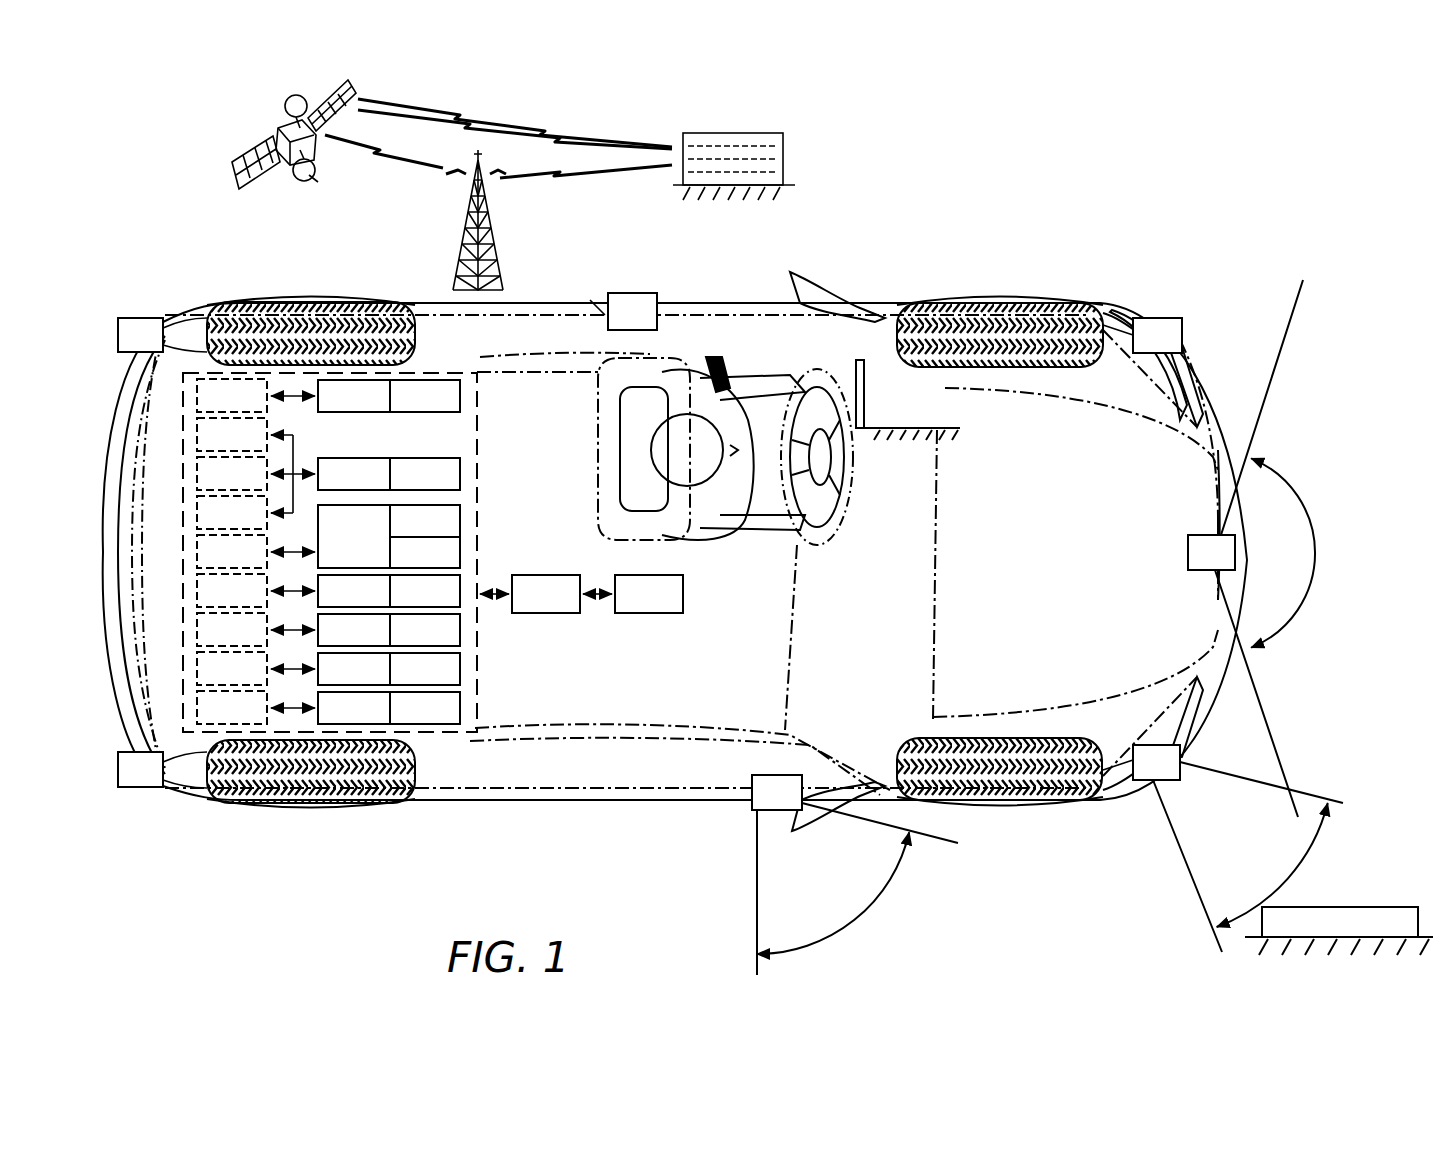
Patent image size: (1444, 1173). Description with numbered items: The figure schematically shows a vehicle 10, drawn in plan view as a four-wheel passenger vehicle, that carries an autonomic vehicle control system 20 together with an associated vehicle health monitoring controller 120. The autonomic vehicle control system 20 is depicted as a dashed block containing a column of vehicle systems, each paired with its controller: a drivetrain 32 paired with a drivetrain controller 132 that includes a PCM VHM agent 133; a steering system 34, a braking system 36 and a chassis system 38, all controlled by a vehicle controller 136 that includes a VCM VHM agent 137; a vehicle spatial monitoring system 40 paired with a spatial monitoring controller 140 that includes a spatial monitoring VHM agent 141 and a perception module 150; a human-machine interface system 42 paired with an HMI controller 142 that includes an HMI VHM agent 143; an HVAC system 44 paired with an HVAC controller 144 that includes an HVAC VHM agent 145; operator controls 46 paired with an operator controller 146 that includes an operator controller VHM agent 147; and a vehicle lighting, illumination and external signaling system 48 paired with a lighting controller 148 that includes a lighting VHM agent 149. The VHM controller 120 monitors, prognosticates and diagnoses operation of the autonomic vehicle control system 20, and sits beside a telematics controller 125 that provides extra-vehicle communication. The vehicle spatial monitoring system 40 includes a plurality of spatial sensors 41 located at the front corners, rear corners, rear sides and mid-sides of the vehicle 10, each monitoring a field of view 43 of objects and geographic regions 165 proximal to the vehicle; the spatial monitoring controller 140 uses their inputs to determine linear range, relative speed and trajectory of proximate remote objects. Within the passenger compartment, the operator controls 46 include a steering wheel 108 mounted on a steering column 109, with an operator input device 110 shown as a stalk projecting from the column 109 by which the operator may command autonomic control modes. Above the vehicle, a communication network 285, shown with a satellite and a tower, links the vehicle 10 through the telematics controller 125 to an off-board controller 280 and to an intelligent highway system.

The vehicle 10 is at (176, 164).
The autonomic vehicle control system 20 is at (182, 548).
The drivetrain 32 is at (245, 407).
The steering system 34 is at (245, 446).
The braking system 36 is at (245, 485).
The chassis system 38 is at (245, 524).
The vehicle spatial monitoring system 40 is at (245, 563).
The spatial sensors 41 is at (154, 780).
The human-machine interface (HMI) system 42 is at (245, 602).
The field of view 43 is at (883, 897).
The HVAC system 44 is at (245, 641).
The operator controls 46 is at (245, 680).
The vehicle lighting, illumination and external signaling system 48 is at (245, 719).
The steering wheel 108 is at (848, 473).
The steering column 109 is at (870, 428).
The operator input device 110 is at (866, 402).
The vehicle health monitoring (VHM) controller 120 is at (565, 605).
The telematics controller 125 is at (668, 605).
The drivetrain controller (PCM) 132 is at (374, 407).
The PCM VHM agent 133 is at (444, 407).
The vehicle controller (VCM) 136 is at (374, 485).
The VCM VHM agent 137 is at (444, 485).
The spatial monitoring controller 140 is at (374, 547).
The spatial monitoring VHM agent 141 is at (444, 564).
The HMI controller 142 is at (374, 602).
The HMI VHM agent 143 is at (444, 602).
The HVAC controller 144 is at (374, 641).
The HVAC VHM agent 145 is at (444, 641).
The operator controller 146 is at (374, 680).
The operator controller VHM agent 147 is at (444, 680).
The lighting controller 148 is at (374, 719).
The lighting VHM agent 149 is at (444, 719).
The perception module 150 is at (444, 532).
The geographic regions 165 is at (1393, 903).
The off-board controller 280 is at (800, 145).
The communication network 285 is at (400, 208).